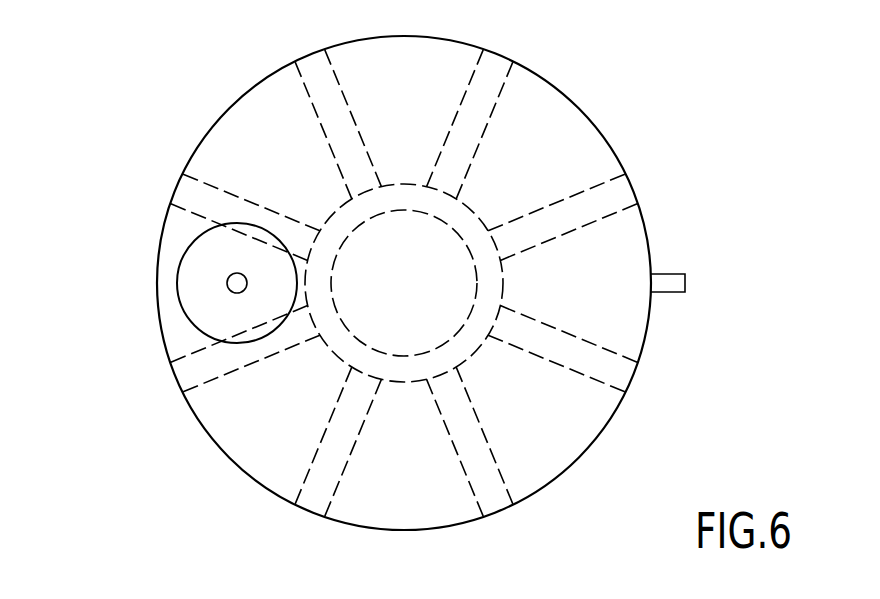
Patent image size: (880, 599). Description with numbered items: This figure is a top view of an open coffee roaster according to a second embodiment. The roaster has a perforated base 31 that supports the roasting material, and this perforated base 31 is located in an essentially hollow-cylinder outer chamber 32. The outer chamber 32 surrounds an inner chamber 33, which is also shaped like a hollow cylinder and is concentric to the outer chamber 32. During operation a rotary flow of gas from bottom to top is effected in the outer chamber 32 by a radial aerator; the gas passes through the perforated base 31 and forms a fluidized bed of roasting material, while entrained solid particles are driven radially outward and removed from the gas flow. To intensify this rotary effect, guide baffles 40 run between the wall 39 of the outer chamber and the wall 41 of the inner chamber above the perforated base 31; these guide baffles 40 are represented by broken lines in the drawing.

The perforated base 31 is at (562, 152).
The outer chamber 32 is at (623, 237).
The inner chamber 33 is at (347, 287).
The wall 39 is at (360, 528).
The guide baffles 40 is at (312, 503).
The wall 41 is at (413, 380).